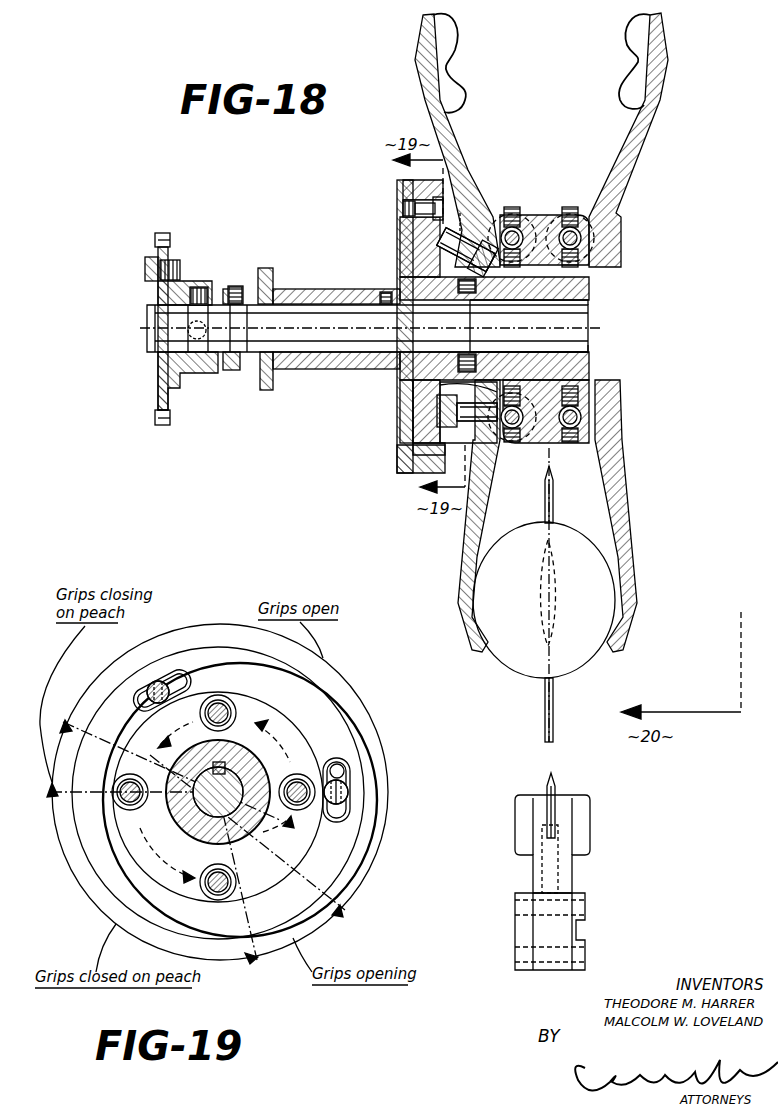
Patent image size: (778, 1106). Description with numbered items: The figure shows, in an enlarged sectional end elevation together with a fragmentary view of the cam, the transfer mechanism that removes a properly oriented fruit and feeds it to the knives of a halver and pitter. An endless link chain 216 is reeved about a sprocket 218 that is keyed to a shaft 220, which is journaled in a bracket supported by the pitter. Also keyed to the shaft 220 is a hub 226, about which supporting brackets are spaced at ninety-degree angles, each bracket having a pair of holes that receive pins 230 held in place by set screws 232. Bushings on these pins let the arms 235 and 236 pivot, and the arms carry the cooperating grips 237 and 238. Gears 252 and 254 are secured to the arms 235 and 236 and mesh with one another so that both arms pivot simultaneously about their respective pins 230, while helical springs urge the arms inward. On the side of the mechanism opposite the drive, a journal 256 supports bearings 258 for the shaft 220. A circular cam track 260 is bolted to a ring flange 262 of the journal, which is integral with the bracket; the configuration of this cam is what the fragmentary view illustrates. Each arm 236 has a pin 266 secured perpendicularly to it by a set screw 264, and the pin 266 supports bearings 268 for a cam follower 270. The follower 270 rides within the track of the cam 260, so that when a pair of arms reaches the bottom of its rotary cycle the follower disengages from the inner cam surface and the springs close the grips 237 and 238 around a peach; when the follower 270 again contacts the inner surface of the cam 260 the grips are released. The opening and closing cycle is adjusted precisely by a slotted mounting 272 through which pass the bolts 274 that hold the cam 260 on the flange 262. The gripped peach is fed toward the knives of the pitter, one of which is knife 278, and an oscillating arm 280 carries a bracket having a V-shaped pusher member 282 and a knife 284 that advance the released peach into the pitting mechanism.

In FIG. 18, the endless link chain 216 is at (162, 233).
In FIG. 18, the sprocket 218 is at (162, 378).
In FIG. 18, the shaft 220 is at (156, 322).
In FIG. 19, the shaft 220 is at (216, 812).
In FIG. 18, the hub 226 is at (586, 290).
In FIG. 19, the hub 226 is at (178, 815).
In FIG. 18, the pins 230 is at (510, 232).
In FIG. 18, the set screws 232 is at (568, 226).
In FIG. 18, the arm 235 is at (626, 150).
In FIG. 18, the arm 236 is at (460, 153).
In FIG. 18, the grip 237 is at (634, 55).
In FIG. 18, the grip 238 is at (458, 72).
In FIG. 18, the gear 252 is at (556, 446).
In FIG. 18, the gear 254 is at (535, 448).
In FIG. 18, the journal 256 is at (326, 290).
In FIG. 18, the bearings 258 is at (296, 288).
In FIG. 18, the circular cam track 260 is at (428, 468).
In FIG. 19, the circular cam track 260 is at (330, 703).
In FIG. 18, the ring flange 262 is at (404, 430).
In FIG. 18, the set screw 264 is at (447, 385).
In FIG. 18, the pin 266 is at (447, 430).
In FIG. 18, the bearings 268 is at (420, 462).
In FIG. 18, the cam follower 270 is at (442, 238).
In FIG. 19, the cam follower 270 is at (230, 697).
In FIG. 19, the slotted mounting 272 is at (183, 676).
In FIG. 18, the bolts 274 is at (412, 204).
In FIG. 19, the bolts 274 is at (156, 682).
In FIG. 18, the knife 278 is at (545, 706).
In FIG. 18, the oscillating arm 280 is at (578, 890).
In FIG. 18, the V-shaped pusher member 282 is at (584, 820).
In FIG. 18, the knife 284 is at (556, 782).